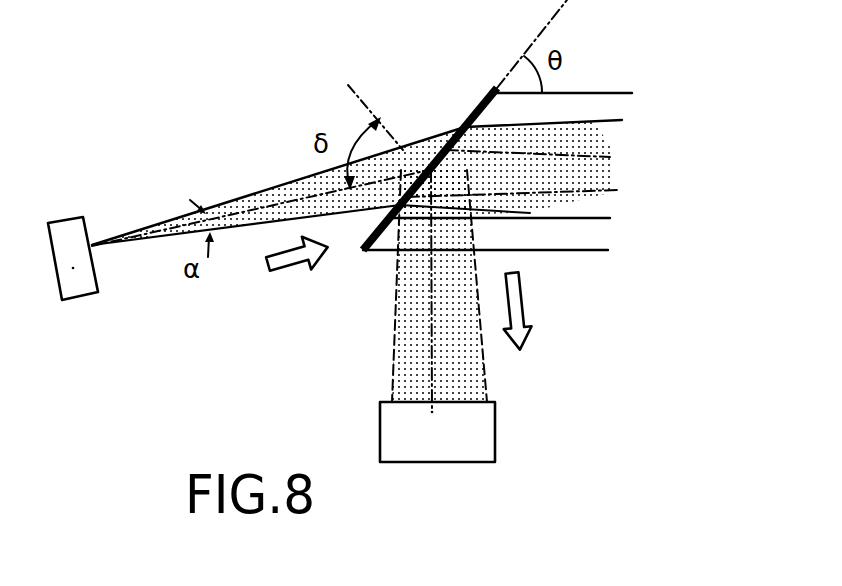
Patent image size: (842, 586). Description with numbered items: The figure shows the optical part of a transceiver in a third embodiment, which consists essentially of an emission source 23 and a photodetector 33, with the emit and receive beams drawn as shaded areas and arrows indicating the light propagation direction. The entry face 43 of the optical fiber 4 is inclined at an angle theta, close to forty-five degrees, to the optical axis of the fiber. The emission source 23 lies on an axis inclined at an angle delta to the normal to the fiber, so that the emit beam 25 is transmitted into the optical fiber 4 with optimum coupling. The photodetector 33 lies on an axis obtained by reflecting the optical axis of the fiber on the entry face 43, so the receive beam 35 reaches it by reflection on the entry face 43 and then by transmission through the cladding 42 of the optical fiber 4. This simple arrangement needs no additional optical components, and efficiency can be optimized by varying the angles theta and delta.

The optical fiber 4 is at (614, 70).
The emission source 23 is at (73, 285).
The emit beam 25 is at (280, 205).
The photodetector 33 is at (470, 443).
The receive beam 35 is at (602, 175).
The cladding 42 is at (595, 235).
The entry face 43 is at (473, 118).